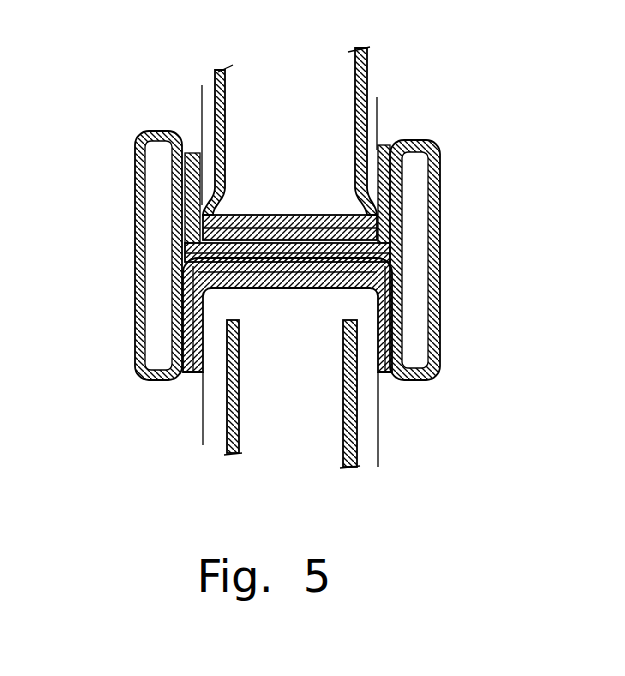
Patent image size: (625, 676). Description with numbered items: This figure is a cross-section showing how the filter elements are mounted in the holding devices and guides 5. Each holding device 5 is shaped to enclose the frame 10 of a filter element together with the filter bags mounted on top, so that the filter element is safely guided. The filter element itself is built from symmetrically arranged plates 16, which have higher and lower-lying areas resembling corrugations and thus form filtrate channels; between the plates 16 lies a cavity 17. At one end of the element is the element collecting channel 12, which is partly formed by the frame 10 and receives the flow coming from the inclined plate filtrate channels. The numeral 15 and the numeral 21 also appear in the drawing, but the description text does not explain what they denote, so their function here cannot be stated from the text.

The holding device and guide 5 is at (413, 200).
The frame 10 is at (187, 177).
The element collecting channel 12 is at (268, 385).
The frame element 15 is at (518, 675).
The plate 16 is at (216, 92).
The cavity 17 is at (328, 90).
The sealing strip 21 is at (183, 210).